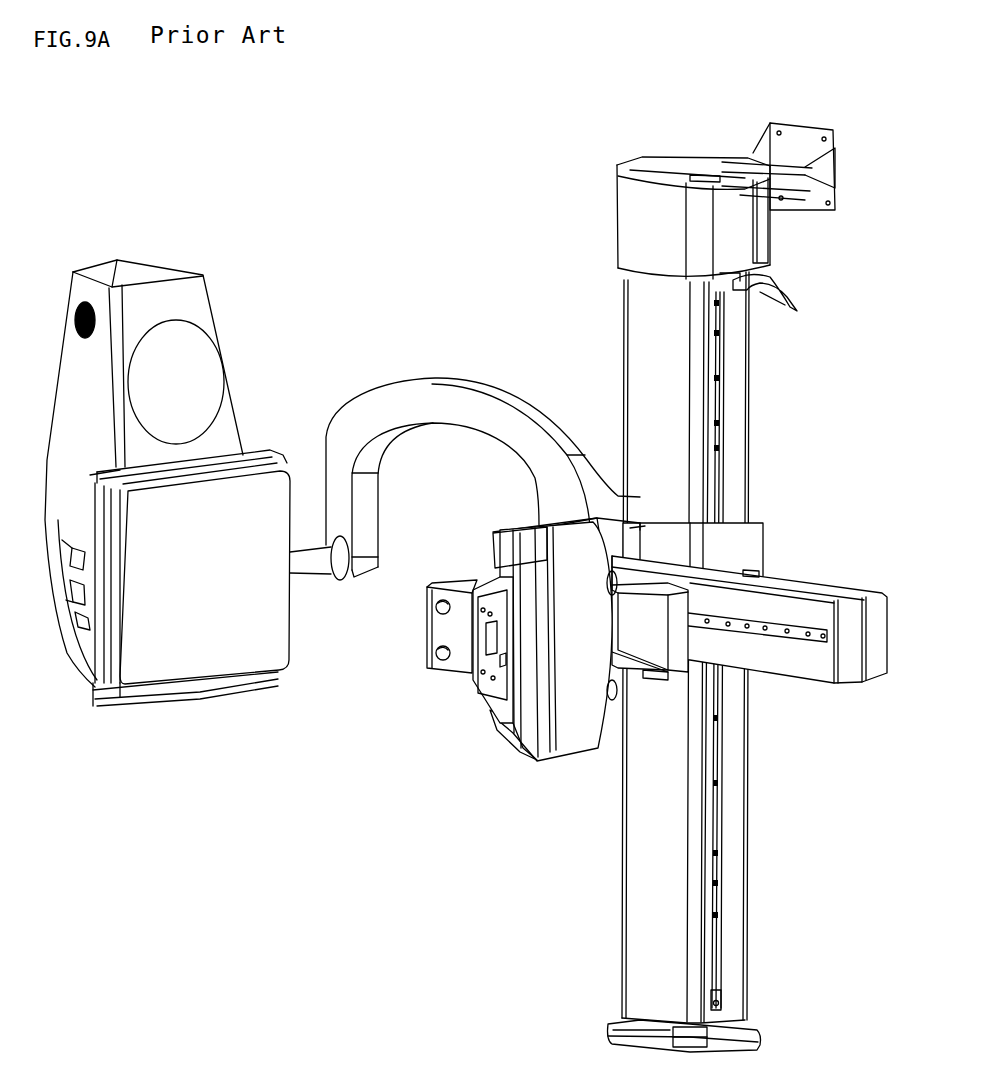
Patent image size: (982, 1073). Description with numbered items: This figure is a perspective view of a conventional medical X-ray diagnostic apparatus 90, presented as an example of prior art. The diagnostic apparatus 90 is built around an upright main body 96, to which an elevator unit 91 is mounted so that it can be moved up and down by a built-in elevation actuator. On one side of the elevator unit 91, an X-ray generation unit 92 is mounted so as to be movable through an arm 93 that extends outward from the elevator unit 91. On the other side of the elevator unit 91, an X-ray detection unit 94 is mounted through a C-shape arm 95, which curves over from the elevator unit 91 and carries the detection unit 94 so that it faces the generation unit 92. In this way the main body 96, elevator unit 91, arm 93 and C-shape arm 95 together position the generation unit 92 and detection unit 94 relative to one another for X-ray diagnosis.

The diagnostic apparatus 90 is at (466, 587).
The elevator unit 91 is at (755, 552).
The X-ray generation unit 92 is at (517, 752).
The arm 93 is at (806, 676).
The X-ray detection unit 94 is at (220, 686).
The C-shape arm 95 is at (453, 379).
The main body 96 is at (748, 389).